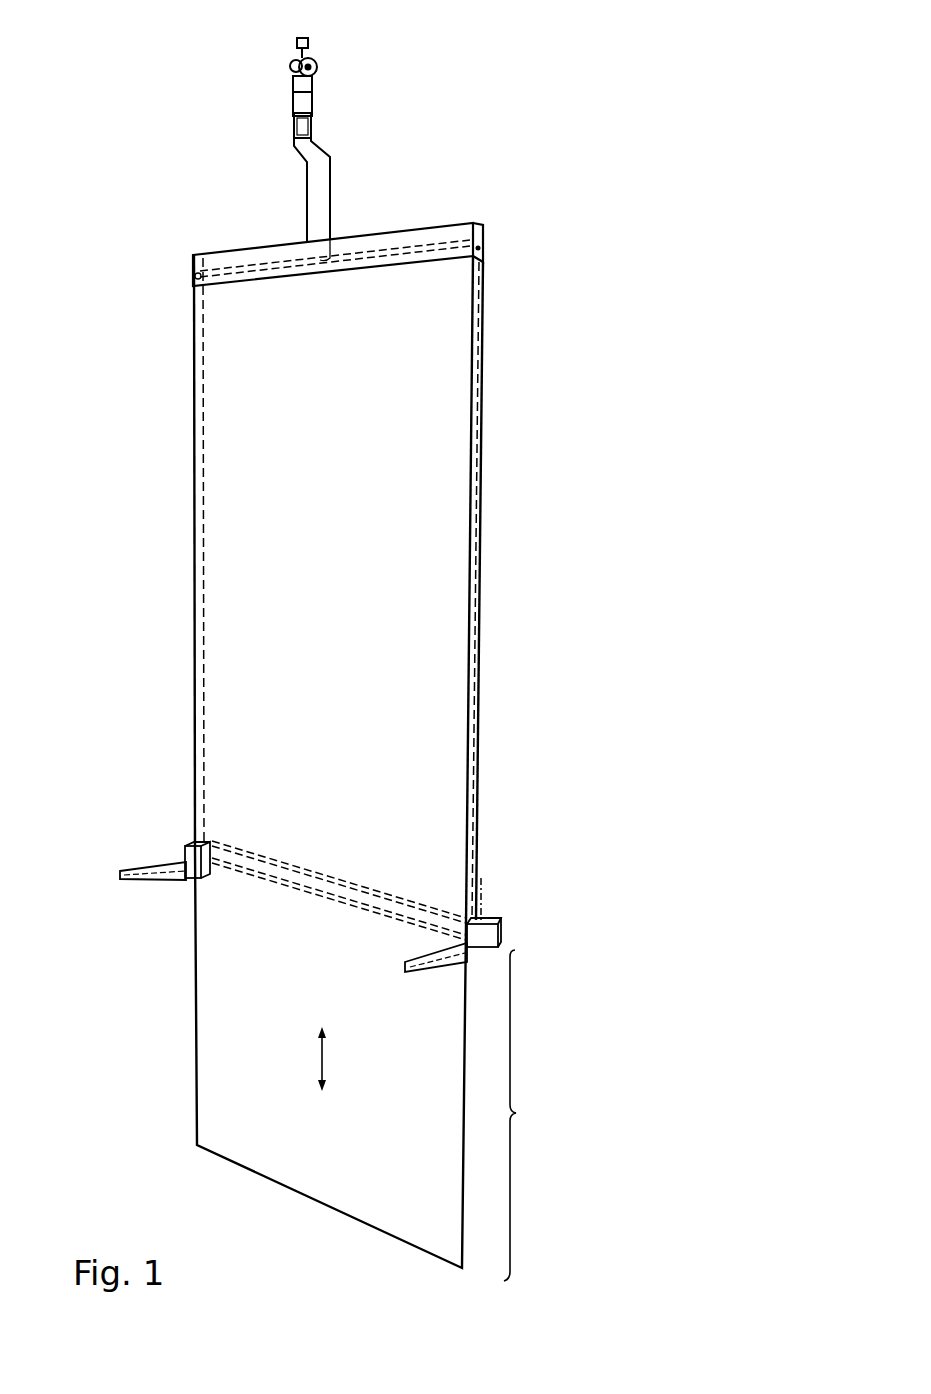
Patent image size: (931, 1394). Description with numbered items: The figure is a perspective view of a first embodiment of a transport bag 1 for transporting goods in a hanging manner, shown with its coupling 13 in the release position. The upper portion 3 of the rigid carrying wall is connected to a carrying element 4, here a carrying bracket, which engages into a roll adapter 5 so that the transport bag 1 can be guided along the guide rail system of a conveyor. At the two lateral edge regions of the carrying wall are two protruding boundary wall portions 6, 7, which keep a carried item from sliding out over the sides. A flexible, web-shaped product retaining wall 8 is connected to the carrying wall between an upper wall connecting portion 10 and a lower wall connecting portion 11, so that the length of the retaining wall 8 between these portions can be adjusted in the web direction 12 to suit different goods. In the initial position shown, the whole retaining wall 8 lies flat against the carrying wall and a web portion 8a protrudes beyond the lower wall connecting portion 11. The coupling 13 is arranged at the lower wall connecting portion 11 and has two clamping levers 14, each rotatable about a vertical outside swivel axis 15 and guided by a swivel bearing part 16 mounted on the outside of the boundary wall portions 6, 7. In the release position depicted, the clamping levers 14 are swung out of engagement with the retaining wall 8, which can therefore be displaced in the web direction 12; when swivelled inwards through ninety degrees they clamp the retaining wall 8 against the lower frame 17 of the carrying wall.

The transport bag 1 is at (488, 97).
The upper portion 3 is at (430, 238).
The upper wall connecting portion 10 is at (344, 209).
The carrying element 4 is at (331, 160).
The roll adapter 5 is at (312, 96).
The boundary wall portion 6 is at (195, 446).
The boundary wall portion 7 is at (473, 460).
The product retaining wall 8 is at (440, 758).
The web portion 8a is at (528, 1115).
The lower wall connecting portion 11 is at (496, 912).
The web direction 12 is at (320, 1060).
The coupling 13 is at (509, 943).
The clamping lever 14 is at (158, 870).
The swivel axis 15 is at (481, 900).
The swivel bearing part 16 is at (187, 850).
The lower frame 17 is at (263, 885).